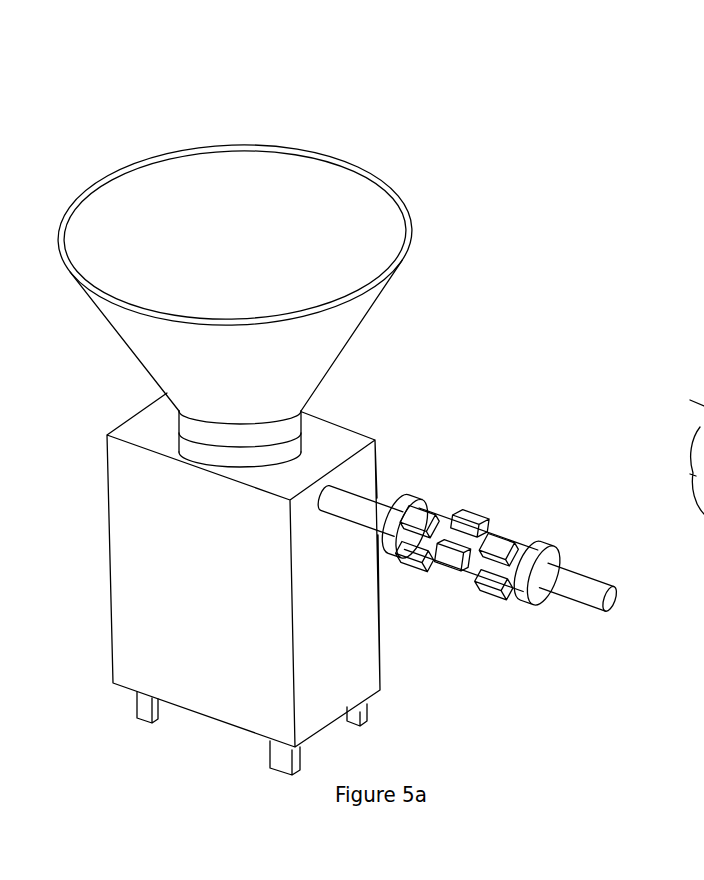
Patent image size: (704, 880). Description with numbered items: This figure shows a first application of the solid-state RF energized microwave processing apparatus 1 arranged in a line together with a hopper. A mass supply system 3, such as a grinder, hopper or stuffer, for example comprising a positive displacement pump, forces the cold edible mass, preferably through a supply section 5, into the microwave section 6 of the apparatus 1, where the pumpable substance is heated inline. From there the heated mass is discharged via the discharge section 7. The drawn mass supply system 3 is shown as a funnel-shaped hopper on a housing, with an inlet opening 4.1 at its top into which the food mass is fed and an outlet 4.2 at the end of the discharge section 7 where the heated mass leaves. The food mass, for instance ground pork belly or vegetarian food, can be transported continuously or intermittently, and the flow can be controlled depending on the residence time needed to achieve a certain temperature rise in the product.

The processing apparatus 1 is at (477, 338).
The mass supply system 3 is at (98, 180).
The inlet opening 4.1 is at (235, 285).
The outlet 4.2 is at (617, 594).
The supply section 5 is at (360, 508).
The microwave section 6 is at (453, 492).
The discharge section 7 is at (565, 575).